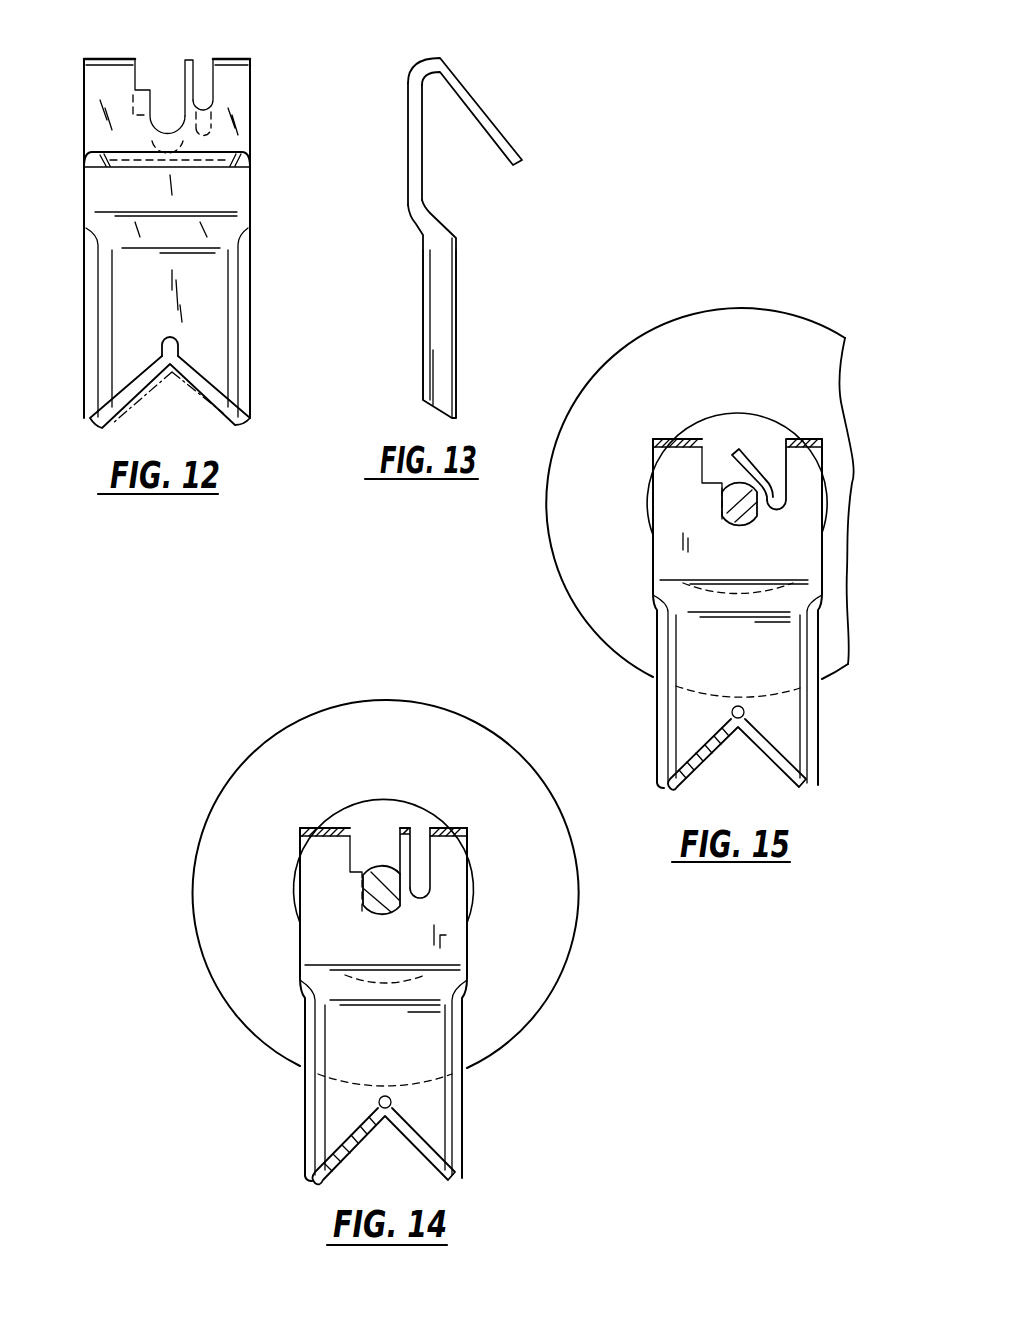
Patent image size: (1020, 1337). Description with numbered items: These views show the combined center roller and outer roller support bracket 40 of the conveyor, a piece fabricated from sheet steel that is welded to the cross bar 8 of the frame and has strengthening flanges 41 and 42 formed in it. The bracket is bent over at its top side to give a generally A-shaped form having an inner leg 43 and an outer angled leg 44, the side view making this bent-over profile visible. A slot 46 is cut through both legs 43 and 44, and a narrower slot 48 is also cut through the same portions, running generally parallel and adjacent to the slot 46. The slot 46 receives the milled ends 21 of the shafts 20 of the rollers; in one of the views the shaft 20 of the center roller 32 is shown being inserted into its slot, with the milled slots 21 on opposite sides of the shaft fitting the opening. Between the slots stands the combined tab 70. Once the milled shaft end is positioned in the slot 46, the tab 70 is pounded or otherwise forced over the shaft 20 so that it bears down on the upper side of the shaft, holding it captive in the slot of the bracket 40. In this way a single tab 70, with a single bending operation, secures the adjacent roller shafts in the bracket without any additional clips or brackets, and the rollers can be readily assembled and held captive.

In FIG. 12, the cross bar 8 is at (222, 415).
In FIG. 14, the cross bar 8 is at (350, 1167).
In FIG. 15, the cross bar 8 is at (782, 775).
In FIG. 14, the shaft 20 is at (377, 912).
In FIG. 15, the shaft 20 is at (740, 515).
In FIG. 14, the milled slots 21 is at (363, 887).
In FIG. 15, the milled slots 21 is at (722, 498).
In FIG. 14, the center roller 32 is at (414, 660).
In FIG. 15, the center roller 32 is at (707, 310).
In FIG. 12, the combined center roller and outer roller support bracket 40 is at (251, 192).
In FIG. 13, the combined center roller and outer roller support bracket 40 is at (412, 215).
In FIG. 14, the combined center roller and outer roller support bracket 40 is at (463, 998).
In FIG. 15, the combined center roller and outer roller support bracket 40 is at (653, 570).
In FIG. 12, the strengthening flange 41 is at (105, 318).
In FIG. 13, the strengthening flange 41 is at (435, 308).
In FIG. 14, the strengthening flange 41 is at (320, 1113).
In FIG. 15, the strengthening flange 41 is at (673, 707).
In FIG. 12, the strengthening flange 42 is at (232, 325).
In FIG. 14, the strengthening flange 42 is at (448, 1117).
In FIG. 15, the strengthening flange 42 is at (803, 717).
In FIG. 12, the inner leg 43 is at (177, 192).
In FIG. 13, the inner leg 43 is at (405, 150).
In FIG. 14, the inner leg 43 is at (440, 935).
In FIG. 15, the inner leg 43 is at (683, 540).
In FIG. 12, the outer angled leg 44 is at (233, 120).
In FIG. 13, the outer angled leg 44 is at (490, 112).
In FIG. 12, the slot 46 is at (167, 100).
In FIG. 14, the slot 46 is at (354, 848).
In FIG. 15, the slot 46 is at (707, 460).
In FIG. 12, the narrower slot 48 is at (203, 77).
In FIG. 14, the narrower slot 48 is at (418, 852).
In FIG. 15, the narrower slot 48 is at (774, 483).
In FIG. 12, the combined tab 70 is at (189, 65).
In FIG. 14, the combined tab 70 is at (407, 830).
In FIG. 15, the combined tab 70 is at (729, 457).